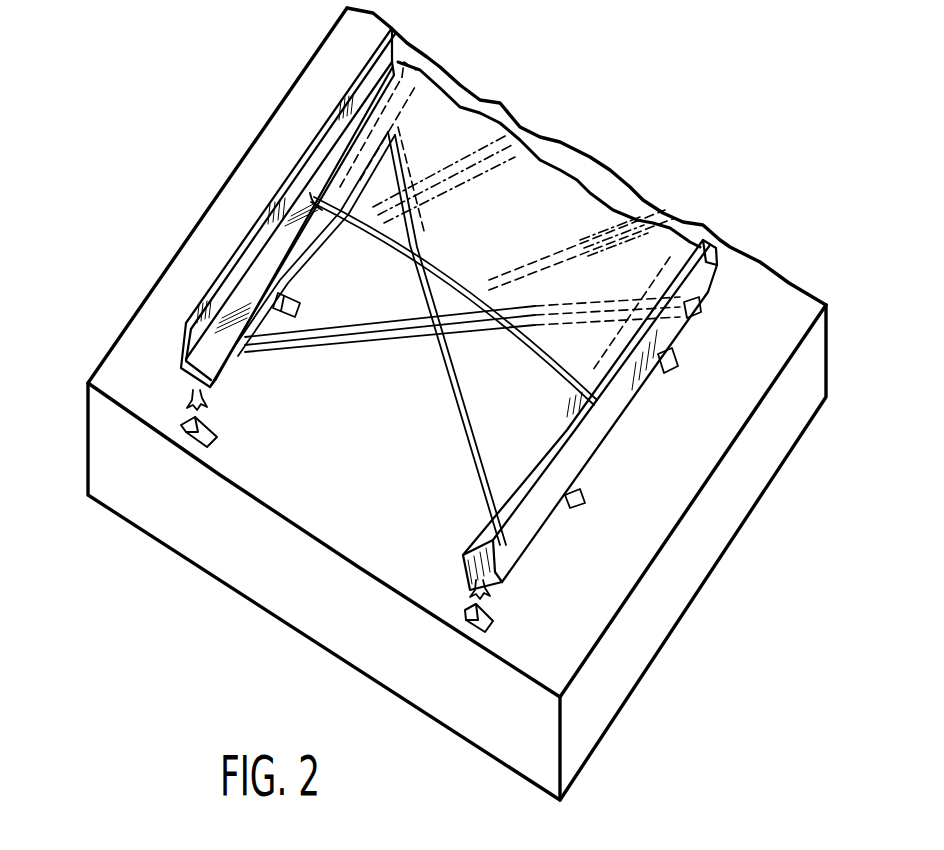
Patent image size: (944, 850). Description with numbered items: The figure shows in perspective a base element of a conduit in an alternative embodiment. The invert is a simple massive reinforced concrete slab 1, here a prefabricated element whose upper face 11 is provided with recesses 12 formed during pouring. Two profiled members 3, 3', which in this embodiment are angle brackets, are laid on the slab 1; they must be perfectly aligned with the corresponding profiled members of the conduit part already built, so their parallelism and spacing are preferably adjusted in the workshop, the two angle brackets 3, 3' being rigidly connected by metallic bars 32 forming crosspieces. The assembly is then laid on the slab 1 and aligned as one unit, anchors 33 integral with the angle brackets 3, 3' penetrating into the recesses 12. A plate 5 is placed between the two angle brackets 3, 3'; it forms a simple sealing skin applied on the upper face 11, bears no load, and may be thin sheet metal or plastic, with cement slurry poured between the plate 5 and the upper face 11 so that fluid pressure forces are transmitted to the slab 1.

The slab 1 is at (800, 287).
The profiled member 3 is at (597, 363).
The profiled member 3' is at (246, 207).
The plate 5 is at (555, 228).
The upper face 11 is at (143, 350).
The recess 12 is at (197, 425).
The bar 32 is at (262, 310).
The anchor 33 is at (190, 388).